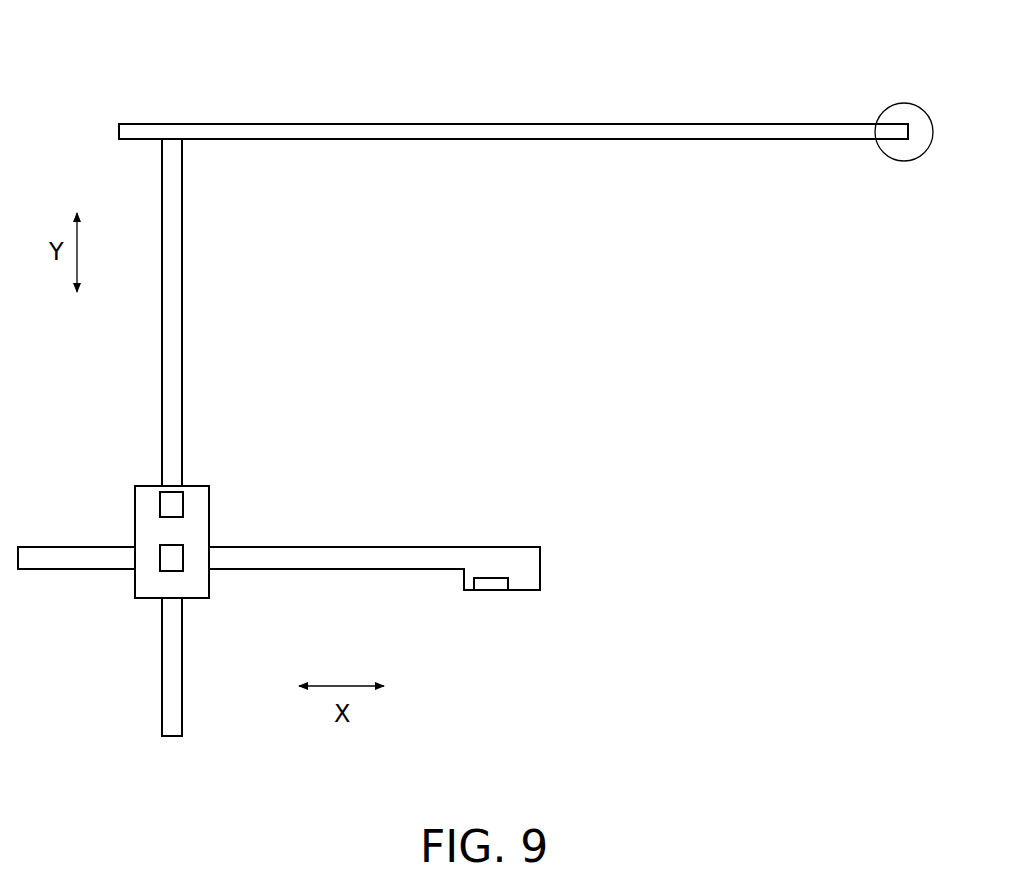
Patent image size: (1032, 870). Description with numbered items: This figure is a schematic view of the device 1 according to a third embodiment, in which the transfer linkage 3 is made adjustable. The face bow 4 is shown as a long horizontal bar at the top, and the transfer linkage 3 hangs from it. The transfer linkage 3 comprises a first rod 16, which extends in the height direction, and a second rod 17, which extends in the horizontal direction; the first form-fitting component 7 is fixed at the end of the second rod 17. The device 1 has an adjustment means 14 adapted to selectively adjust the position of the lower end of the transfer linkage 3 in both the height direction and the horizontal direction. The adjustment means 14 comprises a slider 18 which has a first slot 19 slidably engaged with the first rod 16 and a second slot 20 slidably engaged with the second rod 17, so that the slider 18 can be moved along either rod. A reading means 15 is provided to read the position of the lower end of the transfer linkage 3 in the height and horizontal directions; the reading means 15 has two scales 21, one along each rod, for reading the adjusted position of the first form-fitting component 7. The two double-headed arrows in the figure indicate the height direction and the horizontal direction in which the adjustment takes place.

The device 1 is at (475, 398).
The transfer linkage 3 is at (317, 467).
The face bow 4 is at (548, 142).
The first form-fitting component 7 is at (554, 578).
The adjustment means 14 is at (179, 544).
The reading means 15 is at (191, 505).
The first rod 16 is at (317, 467).
The second rod 17 is at (317, 532).
The slider 18 is at (180, 555).
The first slot 19 is at (189, 484).
The second slot 20 is at (215, 581).
The scale 21 is at (175, 717).